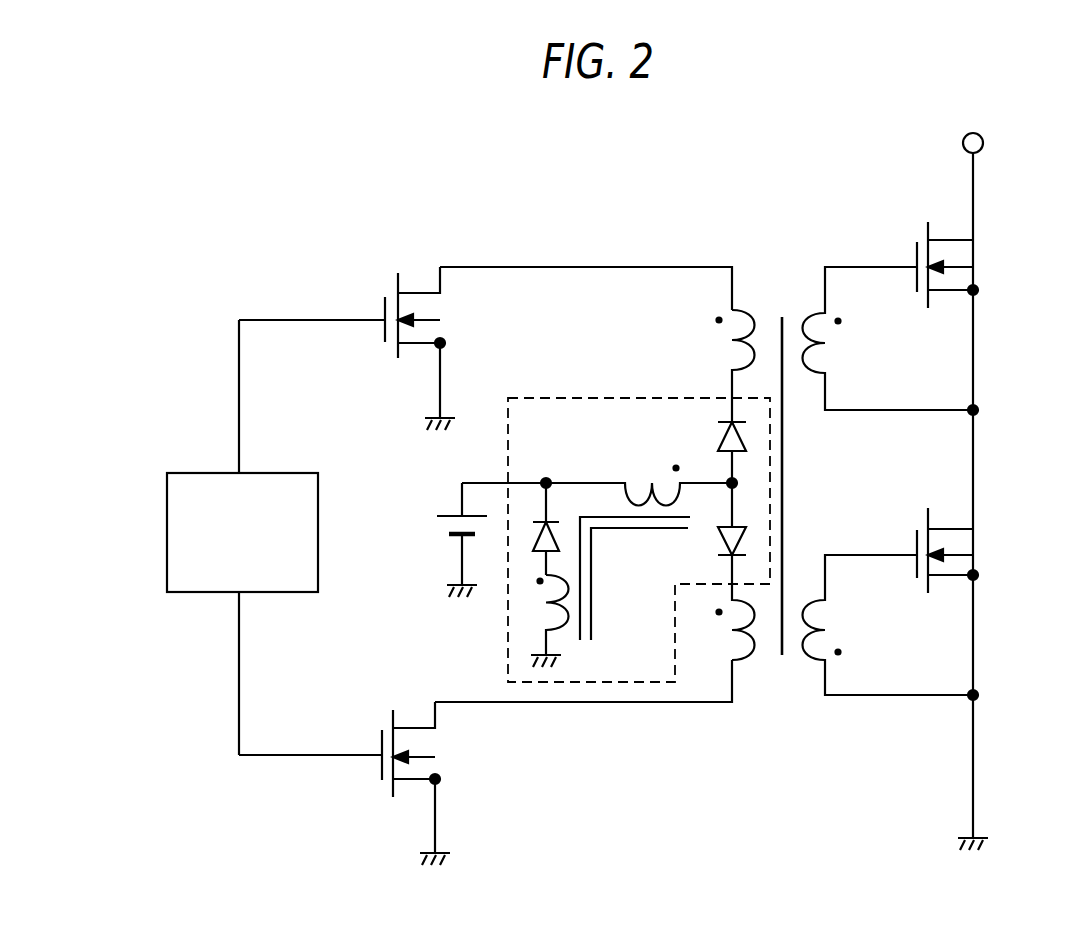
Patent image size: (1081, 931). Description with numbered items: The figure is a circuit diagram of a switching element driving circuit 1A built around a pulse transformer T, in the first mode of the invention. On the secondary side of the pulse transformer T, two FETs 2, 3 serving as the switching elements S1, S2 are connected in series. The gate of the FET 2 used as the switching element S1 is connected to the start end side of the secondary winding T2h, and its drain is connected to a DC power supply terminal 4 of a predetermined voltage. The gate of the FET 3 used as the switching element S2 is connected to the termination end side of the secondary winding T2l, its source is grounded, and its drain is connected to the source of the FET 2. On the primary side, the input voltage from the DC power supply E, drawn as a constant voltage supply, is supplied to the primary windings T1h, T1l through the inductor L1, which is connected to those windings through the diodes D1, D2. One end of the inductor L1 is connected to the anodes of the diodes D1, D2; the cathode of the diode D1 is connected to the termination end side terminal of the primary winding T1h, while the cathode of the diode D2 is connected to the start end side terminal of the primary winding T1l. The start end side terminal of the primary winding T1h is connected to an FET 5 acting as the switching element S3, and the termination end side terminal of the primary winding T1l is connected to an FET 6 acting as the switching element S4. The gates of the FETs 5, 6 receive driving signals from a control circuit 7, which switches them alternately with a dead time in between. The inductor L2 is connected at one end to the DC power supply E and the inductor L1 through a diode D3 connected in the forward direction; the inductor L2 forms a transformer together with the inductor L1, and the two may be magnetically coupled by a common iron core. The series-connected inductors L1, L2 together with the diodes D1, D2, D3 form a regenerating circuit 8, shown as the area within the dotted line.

The switching element driving circuit 1A is at (288, 240).
The FET 2 is at (941, 280).
The FET 3 is at (937, 550).
The DC power supply terminal 4 is at (983, 148).
The FET 5 is at (347, 348).
The FET 6 is at (344, 783).
The control circuit 7 is at (167, 493).
The regenerating circuit 8 is at (639, 510).
The pulse transformer T is at (830, 442).
The primary winding T1h is at (721, 366).
The primary winding T1l is at (724, 607).
The secondary winding T2h is at (888, 338).
The secondary winding T2l is at (888, 625).
The diode D1 is at (714, 452).
The diode D2 is at (714, 527).
The diode D3 is at (535, 529).
The inductor L1 is at (639, 481).
The inductor L2 is at (541, 621).
The DC power supply E is at (479, 540).
The switching element S1 is at (915, 283).
The switching element S2 is at (915, 540).
The switching element S3 is at (385, 332).
The switching element S4 is at (380, 768).